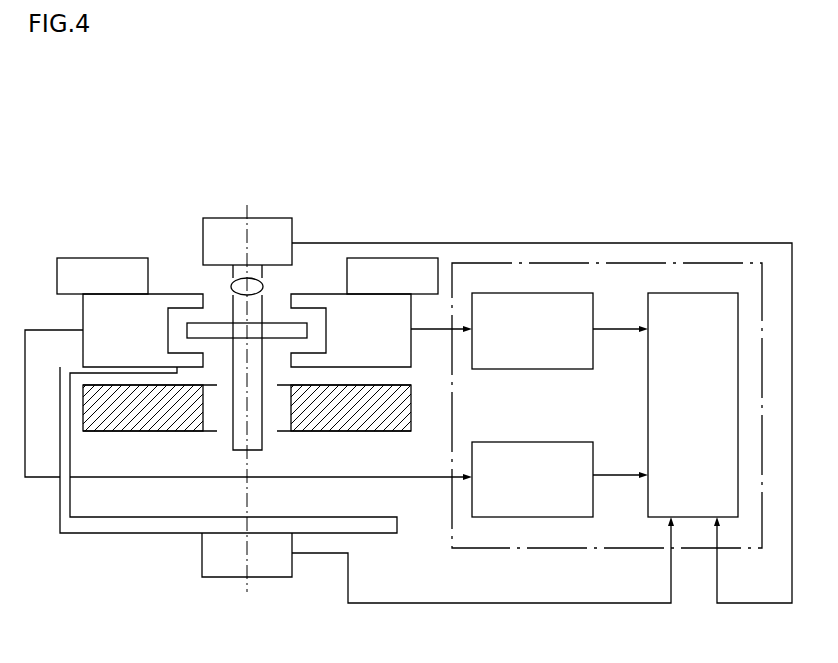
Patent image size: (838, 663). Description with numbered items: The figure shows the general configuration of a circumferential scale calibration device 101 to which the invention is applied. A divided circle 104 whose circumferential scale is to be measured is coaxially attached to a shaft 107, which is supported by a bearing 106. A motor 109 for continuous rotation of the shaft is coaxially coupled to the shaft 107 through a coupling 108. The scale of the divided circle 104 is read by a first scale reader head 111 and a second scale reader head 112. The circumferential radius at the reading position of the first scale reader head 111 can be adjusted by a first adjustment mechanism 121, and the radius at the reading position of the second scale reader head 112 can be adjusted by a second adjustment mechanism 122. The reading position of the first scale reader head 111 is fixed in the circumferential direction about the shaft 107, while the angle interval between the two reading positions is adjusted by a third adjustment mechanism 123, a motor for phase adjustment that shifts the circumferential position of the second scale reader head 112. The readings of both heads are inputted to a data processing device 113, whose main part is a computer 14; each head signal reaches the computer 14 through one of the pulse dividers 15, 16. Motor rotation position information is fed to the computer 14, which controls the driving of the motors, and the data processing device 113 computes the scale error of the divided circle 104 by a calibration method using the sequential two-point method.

The circumferential scale calibration device 101 is at (650, 209).
The divided circle 104 is at (281, 313).
The bearing 106 is at (137, 433).
The shaft 107 is at (218, 438).
The coupling 108 is at (218, 279).
The motor 109 is at (273, 214).
The first scale reader head 111 is at (351, 312).
The second scale reader head 112 is at (133, 312).
The data processing device 113 is at (496, 262).
The first adjustment mechanism 121 is at (403, 250).
The second adjustment mechanism 122 is at (81, 253).
The third adjustment mechanism 123 is at (195, 556).
The computer 14 is at (712, 292).
The pulse divider 15 is at (561, 292).
The pulse divider 16 is at (567, 441).